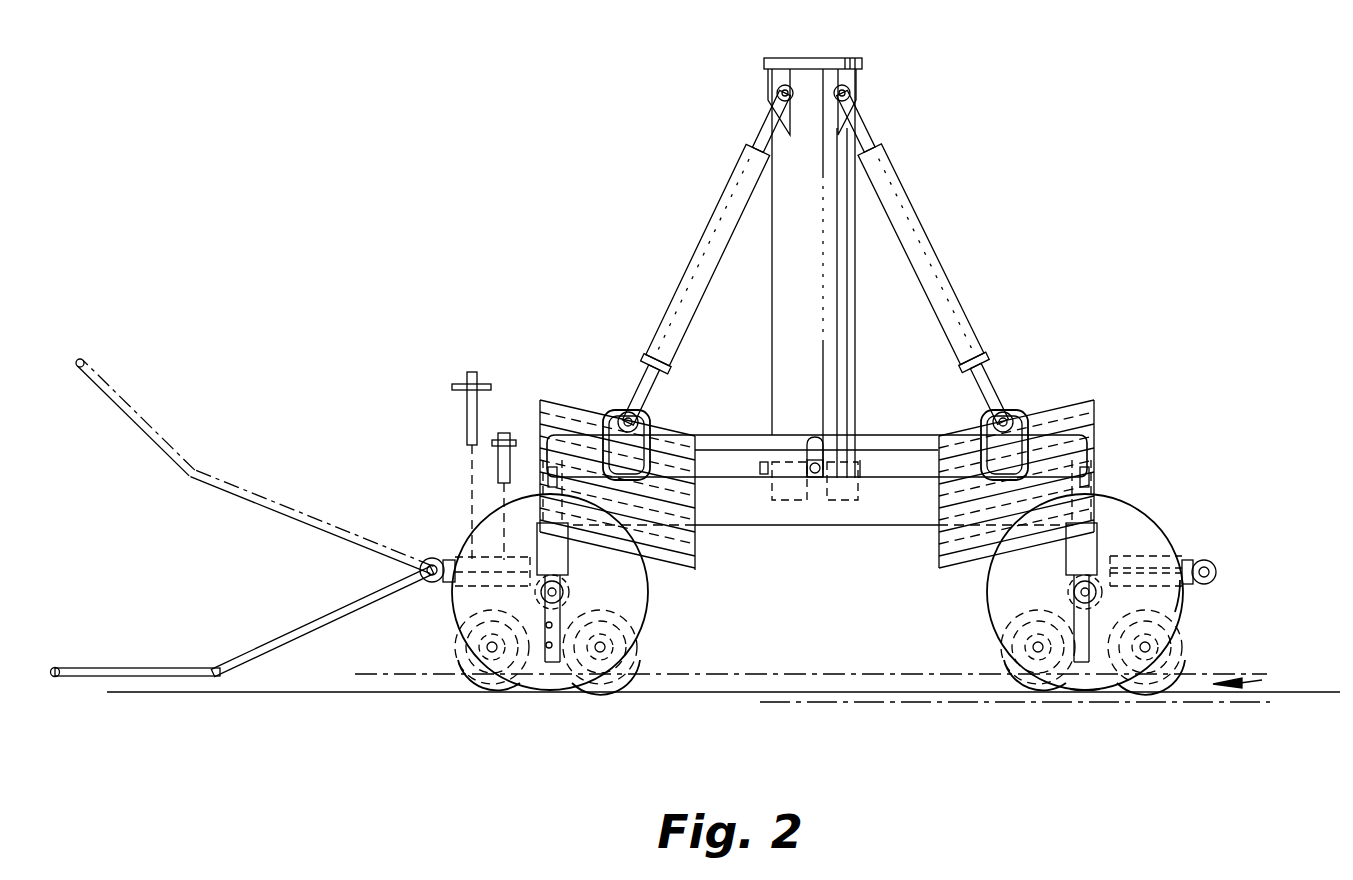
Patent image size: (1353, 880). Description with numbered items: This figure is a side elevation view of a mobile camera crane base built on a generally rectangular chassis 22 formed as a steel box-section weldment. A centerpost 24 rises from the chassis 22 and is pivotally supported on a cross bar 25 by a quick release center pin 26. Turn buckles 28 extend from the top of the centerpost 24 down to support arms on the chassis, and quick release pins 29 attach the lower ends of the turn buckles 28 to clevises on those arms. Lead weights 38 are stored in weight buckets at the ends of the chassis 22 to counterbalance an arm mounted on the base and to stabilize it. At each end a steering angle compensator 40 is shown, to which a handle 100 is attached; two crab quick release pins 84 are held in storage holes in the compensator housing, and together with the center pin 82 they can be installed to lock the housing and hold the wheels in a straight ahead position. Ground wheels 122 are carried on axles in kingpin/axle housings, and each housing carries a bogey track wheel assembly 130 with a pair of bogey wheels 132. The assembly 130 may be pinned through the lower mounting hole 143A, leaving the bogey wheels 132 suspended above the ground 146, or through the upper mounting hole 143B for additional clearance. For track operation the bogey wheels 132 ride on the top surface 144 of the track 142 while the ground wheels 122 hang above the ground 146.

The chassis 22 is at (728, 435).
The centerpost 24 is at (826, 283).
The cross bar 25 is at (862, 460).
The quick release center pin 26 is at (764, 474).
The turn buckles 28 is at (918, 208).
The quick release pins 29 is at (642, 420).
The lead weights 38 is at (1065, 400).
The steering angle compensator 40 is at (1160, 550).
The center pin 82 is at (504, 433).
The crab quick release pins 84 is at (466, 372).
The handle 100 is at (295, 625).
The wheel 122 is at (1150, 515).
The bogey track wheel assembly 130 is at (640, 590).
The bogey wheels 132 is at (455, 660).
The track 142 is at (1265, 680).
The lower bogey track wheel assembly mounting hole 143A is at (1097, 692).
The upper bogey track wheel assembly mounting hole 143B is at (1178, 598).
The top surface of the track 144 is at (947, 674).
The ground 146 is at (812, 692).